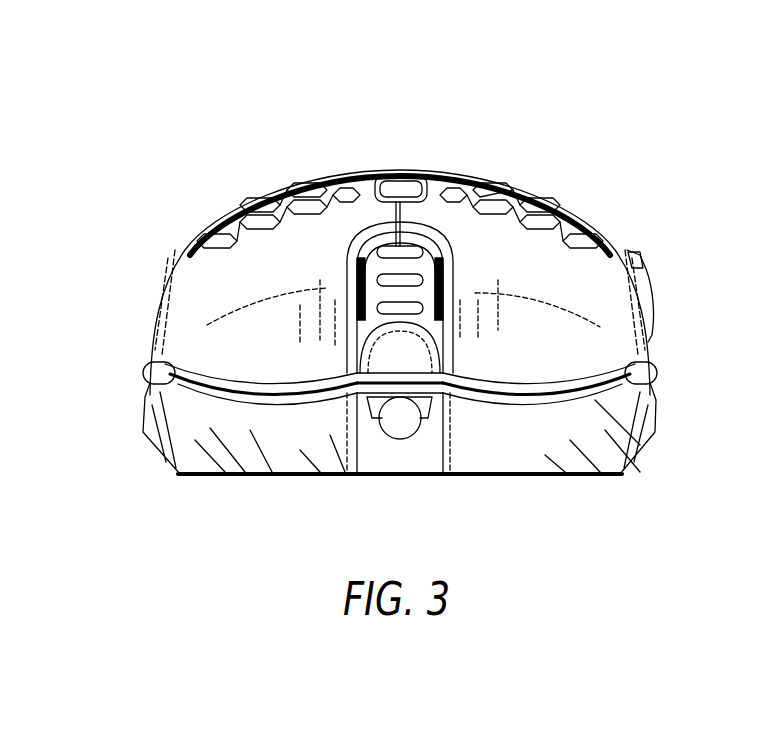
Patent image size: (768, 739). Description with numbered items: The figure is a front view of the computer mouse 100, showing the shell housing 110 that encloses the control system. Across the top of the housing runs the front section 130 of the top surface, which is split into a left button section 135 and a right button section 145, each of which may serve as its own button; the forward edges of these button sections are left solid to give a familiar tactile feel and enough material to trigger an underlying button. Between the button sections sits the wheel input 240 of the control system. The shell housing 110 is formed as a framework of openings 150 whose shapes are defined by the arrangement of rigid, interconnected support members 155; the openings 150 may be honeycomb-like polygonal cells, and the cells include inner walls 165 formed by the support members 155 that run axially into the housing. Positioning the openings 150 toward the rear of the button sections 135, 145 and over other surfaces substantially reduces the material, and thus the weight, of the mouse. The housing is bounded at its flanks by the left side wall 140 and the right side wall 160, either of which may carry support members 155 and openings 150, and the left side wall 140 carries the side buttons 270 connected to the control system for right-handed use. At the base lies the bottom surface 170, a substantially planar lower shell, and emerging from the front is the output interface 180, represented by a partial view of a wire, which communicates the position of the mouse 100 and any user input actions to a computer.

The computer mouse 100 is at (637, 145).
The shell housing 110 is at (657, 347).
The front section 130 is at (301, 226).
The left button section 135 is at (185, 353).
The left side wall 140 is at (663, 375).
The right button section 145 is at (540, 382).
The openings 150 is at (217, 217).
The support members 155 is at (517, 190).
The right side wall 160 is at (155, 302).
The inner walls 165 is at (487, 185).
The bottom surface 170 is at (270, 486).
The output interface 180 is at (396, 427).
The wheel input 240 is at (380, 240).
The side buttons 270 is at (650, 287).